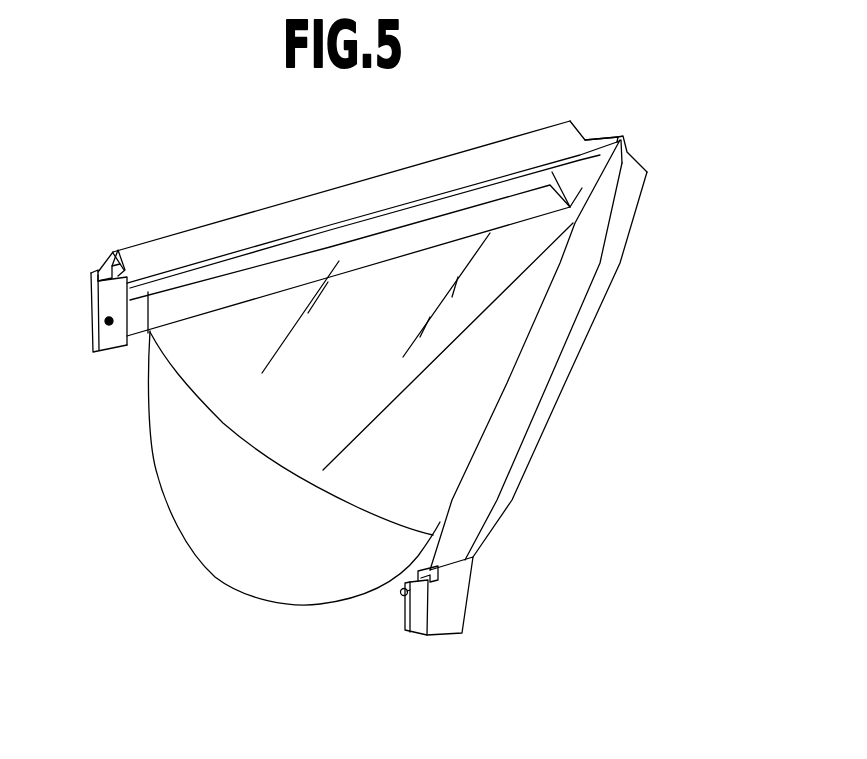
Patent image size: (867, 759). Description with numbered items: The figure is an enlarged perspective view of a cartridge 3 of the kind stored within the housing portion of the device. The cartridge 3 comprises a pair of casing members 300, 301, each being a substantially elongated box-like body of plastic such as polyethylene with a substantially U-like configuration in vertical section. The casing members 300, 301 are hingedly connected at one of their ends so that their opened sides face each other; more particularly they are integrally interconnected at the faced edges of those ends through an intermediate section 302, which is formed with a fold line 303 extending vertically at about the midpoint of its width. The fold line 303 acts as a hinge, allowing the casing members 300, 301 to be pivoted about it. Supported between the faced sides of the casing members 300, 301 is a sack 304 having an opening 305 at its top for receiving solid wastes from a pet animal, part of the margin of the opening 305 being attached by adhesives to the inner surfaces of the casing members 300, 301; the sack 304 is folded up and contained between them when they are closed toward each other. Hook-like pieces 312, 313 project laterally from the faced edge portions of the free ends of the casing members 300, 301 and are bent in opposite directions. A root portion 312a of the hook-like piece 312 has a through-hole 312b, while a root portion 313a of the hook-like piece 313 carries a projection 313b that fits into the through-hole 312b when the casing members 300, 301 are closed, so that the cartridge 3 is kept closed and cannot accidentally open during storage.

The cartridge 3 is at (411, 165).
The casing member 300 is at (277, 203).
The casing member 301 is at (620, 265).
The intermediate section 302 is at (598, 138).
The fold line 303 is at (624, 140).
The sack 304 is at (176, 535).
The opening 305 is at (214, 399).
The hook-like piece 312 is at (92, 270).
The root portion 312a is at (113, 276).
The through-hole 312b is at (110, 328).
The hook-like piece 313 is at (429, 641).
The root portion 313a is at (427, 556).
The projection 313b is at (400, 596).